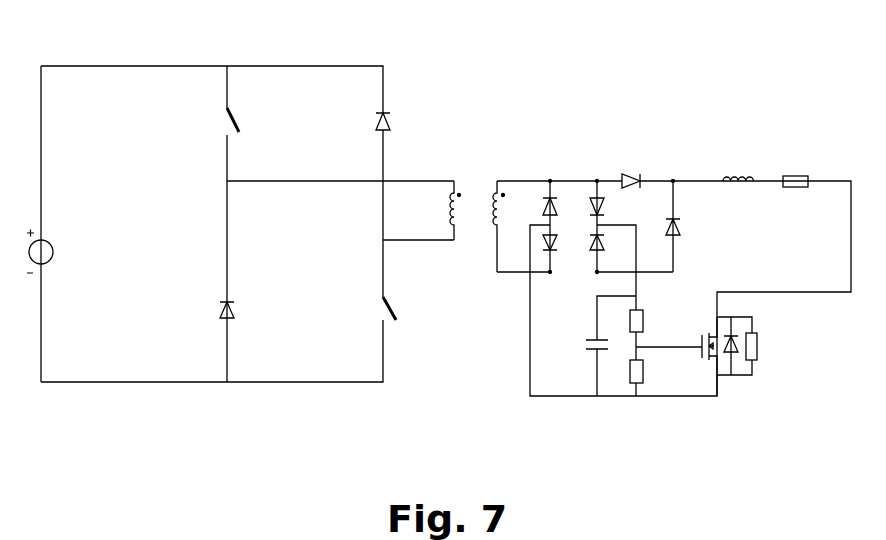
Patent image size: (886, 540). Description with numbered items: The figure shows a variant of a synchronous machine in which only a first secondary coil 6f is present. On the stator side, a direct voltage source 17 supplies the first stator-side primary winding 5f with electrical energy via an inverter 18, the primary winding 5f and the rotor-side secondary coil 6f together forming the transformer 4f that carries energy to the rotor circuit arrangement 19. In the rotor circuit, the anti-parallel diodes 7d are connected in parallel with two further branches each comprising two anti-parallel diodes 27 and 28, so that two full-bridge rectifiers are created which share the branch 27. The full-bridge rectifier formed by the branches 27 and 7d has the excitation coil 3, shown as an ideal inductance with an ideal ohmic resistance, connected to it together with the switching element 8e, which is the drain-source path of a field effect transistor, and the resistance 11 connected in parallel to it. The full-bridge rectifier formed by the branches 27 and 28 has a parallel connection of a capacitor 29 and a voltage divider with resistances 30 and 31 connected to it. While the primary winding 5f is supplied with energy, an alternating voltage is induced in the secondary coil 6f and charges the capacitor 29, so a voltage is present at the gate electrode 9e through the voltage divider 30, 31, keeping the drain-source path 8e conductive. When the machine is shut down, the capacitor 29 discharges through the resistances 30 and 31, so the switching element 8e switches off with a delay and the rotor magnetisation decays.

The stator-side voltage source 17 is at (50, 243).
The inverter 18 is at (383, 47).
The transformer 4f is at (475, 182).
The first stator-side primary winding 5f is at (451, 189).
The first rotor-side secondary coil 6f is at (501, 205).
The anti-parallel diodes 27 is at (562, 165).
The anti-parallel diodes 28 is at (610, 165).
The anti-parallel diodes 7d is at (680, 165).
The excitation winding 3 is at (822, 165).
The rotor circuit arrangement 19 is at (674, 265).
The capacitor 29 is at (592, 342).
The resistance 30 is at (643, 322).
The resistance 31 is at (631, 382).
The switching element 8e is at (712, 352).
The control element 9e is at (702, 350).
The resistance 11 is at (758, 347).